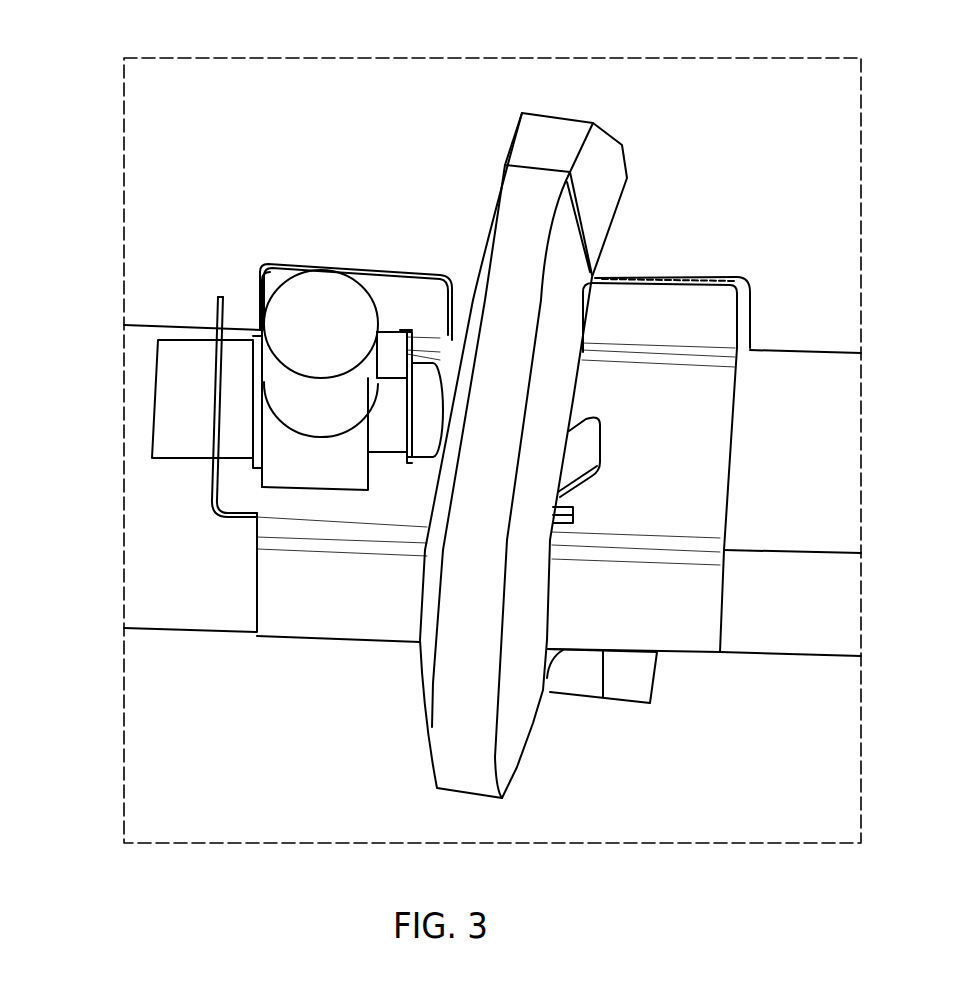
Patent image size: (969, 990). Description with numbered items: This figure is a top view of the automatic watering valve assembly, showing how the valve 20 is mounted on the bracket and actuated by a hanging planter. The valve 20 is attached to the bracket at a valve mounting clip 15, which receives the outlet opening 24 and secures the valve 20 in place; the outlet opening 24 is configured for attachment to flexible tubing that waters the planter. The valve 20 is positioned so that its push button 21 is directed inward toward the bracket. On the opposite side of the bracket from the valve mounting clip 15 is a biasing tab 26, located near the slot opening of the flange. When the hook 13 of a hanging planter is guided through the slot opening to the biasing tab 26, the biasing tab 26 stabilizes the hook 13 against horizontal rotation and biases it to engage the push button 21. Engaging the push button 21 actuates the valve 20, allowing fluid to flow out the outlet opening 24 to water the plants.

The hook 13 is at (537, 130).
The valve mounting clip 15 is at (218, 303).
The valve 20 is at (303, 458).
The push button 21 is at (427, 372).
The outlet opening 24 is at (163, 418).
The biasing tab 26 is at (598, 462).